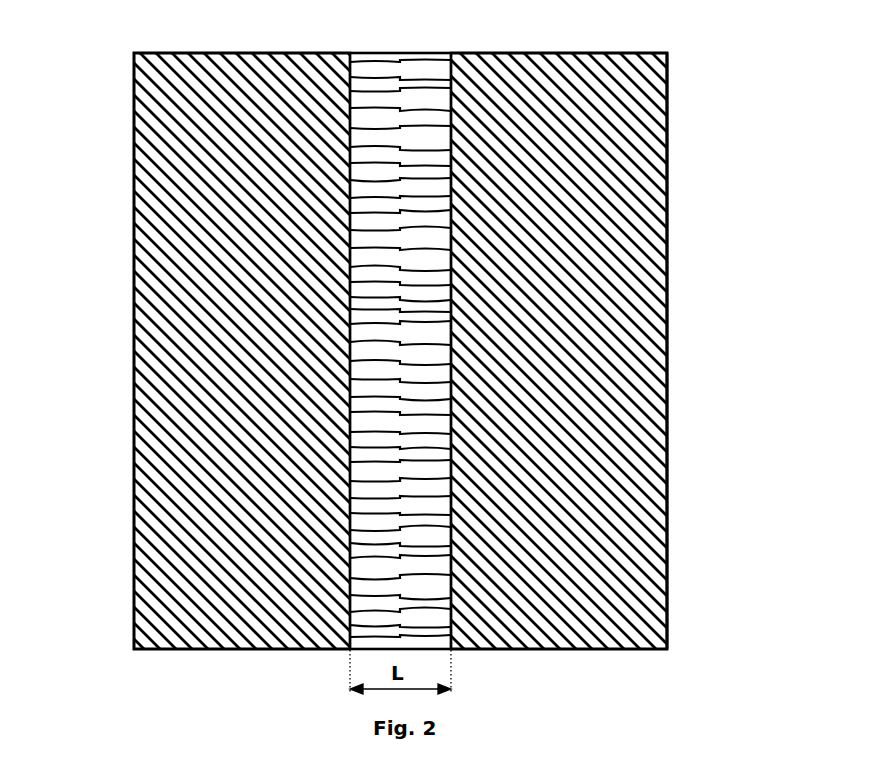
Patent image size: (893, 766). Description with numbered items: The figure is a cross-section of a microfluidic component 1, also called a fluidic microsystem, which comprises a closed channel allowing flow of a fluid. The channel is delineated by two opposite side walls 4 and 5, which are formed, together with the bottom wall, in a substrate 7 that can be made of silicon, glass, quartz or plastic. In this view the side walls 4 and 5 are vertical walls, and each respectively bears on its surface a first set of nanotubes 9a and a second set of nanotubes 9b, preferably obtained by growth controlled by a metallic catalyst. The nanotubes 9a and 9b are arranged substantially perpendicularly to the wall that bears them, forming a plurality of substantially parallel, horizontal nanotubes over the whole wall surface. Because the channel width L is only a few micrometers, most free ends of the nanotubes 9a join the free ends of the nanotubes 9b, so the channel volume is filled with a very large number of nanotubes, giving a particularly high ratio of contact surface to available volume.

The microfluidic component 1 is at (743, 292).
The side wall 4 is at (350, 119).
The side wall 5 is at (453, 175).
The substrate 7 is at (640, 447).
The first set of nanotubes 9a is at (368, 110).
The second set of nanotubes 9b is at (430, 145).